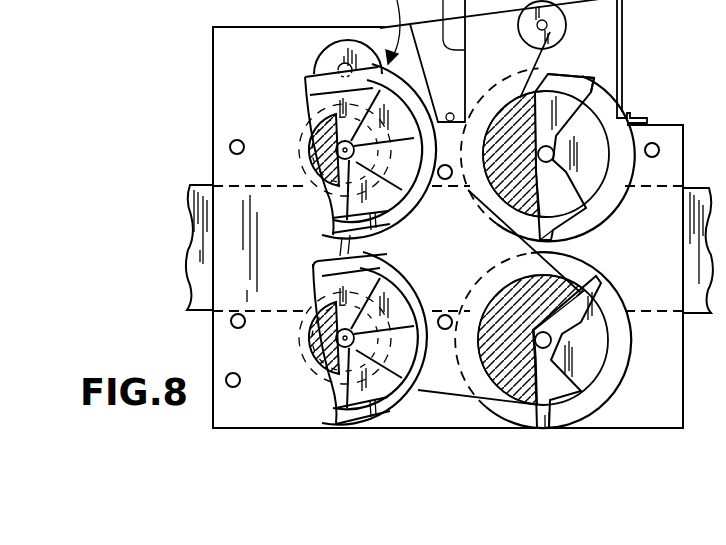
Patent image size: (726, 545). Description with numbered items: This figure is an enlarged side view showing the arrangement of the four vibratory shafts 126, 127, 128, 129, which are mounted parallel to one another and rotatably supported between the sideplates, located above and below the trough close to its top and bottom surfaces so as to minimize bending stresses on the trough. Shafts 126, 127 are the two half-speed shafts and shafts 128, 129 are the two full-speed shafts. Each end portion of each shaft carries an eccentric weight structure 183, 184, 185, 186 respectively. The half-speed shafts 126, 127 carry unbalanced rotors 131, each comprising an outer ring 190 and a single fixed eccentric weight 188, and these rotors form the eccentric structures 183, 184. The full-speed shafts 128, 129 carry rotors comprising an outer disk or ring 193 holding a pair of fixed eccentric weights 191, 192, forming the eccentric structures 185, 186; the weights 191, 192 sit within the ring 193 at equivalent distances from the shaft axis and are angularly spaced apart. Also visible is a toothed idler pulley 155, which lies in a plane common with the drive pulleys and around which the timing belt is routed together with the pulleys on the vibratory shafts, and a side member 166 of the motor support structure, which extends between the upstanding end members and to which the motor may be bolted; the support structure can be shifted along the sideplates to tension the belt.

The vibratory shaft 126 is at (595, 255).
The vibratory shaft 127 is at (586, 410).
The vibratory shaft 128 is at (336, 146).
The vibratory shaft 129 is at (315, 362).
The rotor 131 is at (612, 76).
The idler pulley 155 is at (338, 50).
The side member 166 is at (625, 44).
The eccentric weight structure 183 is at (613, 117).
The eccentric weight structure 184 is at (606, 380).
The eccentric weight structure 185 is at (308, 84).
The eccentric weight structure 186 is at (328, 256).
The eccentric weight 188 is at (590, 180).
The ring 190 is at (578, 207).
The eccentric weight 191 is at (383, 236).
The eccentric weight 192 is at (404, 197).
The ring 193 is at (397, 213).